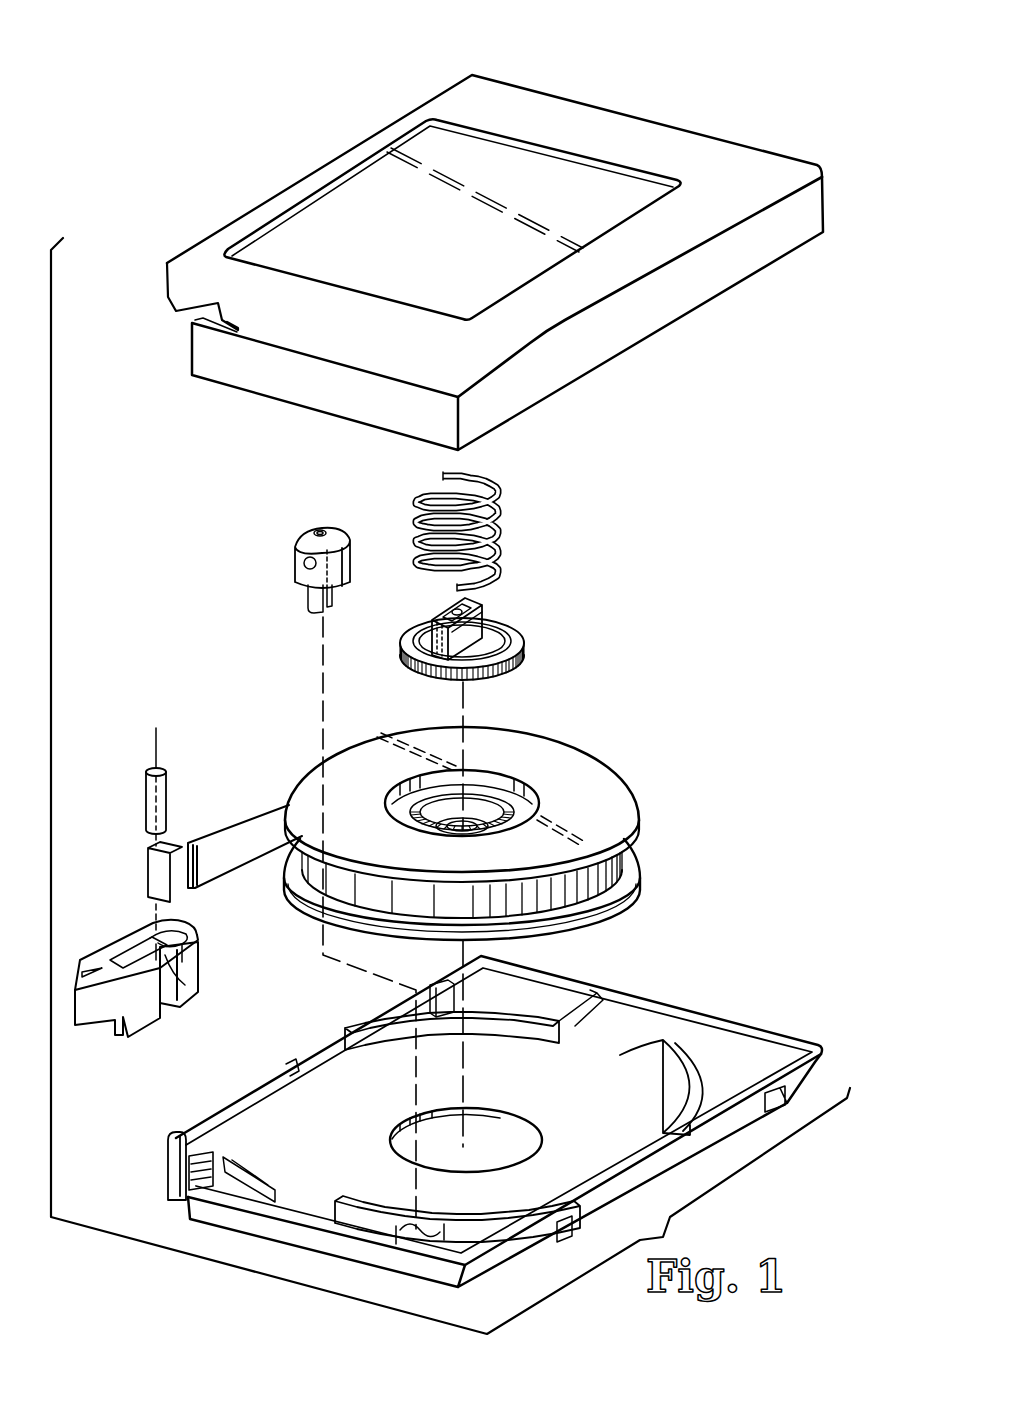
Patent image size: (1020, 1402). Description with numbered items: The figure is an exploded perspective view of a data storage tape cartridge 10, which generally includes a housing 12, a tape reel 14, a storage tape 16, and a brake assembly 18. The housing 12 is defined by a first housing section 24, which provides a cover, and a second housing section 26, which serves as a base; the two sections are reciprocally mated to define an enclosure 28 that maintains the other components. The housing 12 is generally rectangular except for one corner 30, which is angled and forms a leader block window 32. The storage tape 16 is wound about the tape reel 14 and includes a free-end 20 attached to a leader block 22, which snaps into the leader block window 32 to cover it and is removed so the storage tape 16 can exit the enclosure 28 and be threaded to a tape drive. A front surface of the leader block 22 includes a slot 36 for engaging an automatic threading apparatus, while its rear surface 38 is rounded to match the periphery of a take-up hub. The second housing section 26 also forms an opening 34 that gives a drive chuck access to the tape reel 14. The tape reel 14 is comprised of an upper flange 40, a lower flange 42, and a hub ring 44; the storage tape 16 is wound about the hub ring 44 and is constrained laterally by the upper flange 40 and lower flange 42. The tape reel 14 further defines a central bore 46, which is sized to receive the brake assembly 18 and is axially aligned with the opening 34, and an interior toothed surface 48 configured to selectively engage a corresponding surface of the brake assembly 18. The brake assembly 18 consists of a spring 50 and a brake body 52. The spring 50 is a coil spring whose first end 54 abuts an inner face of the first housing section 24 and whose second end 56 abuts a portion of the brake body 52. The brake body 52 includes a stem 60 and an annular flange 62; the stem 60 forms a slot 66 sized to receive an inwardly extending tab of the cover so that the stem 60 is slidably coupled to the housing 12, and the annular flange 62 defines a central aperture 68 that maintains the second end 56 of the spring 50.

The data storage tape cartridge 10 is at (748, 62).
The housing 12 is at (782, 140).
The tape reel 14 is at (573, 748).
The storage tape 16 is at (257, 820).
The brake assembly 18 is at (577, 549).
The free-end 20 is at (160, 871).
The leader block 22 is at (193, 953).
The first housing section 24 is at (528, 98).
The second housing section 26 is at (732, 1017).
The enclosure 28 is at (598, 1067).
The corner 30 is at (167, 290).
The leader block window 32 is at (291, 1067).
The opening 34 is at (510, 1115).
The slot 36 is at (182, 993).
The rear surface 38 is at (183, 933).
The upper flange 40 is at (607, 773).
The lower flange 42 is at (630, 862).
The hub ring 44 is at (497, 787).
The central bore 46 is at (413, 791).
The interior toothed surface 48 is at (390, 803).
The spring 50 is at (502, 484).
The brake body 52 is at (523, 636).
The first end 54 is at (440, 475).
The second end 56 is at (452, 586).
The stem 60 is at (480, 607).
The annular flange 62 is at (522, 656).
The slot 66 is at (447, 611).
The central aperture 68 is at (489, 641).